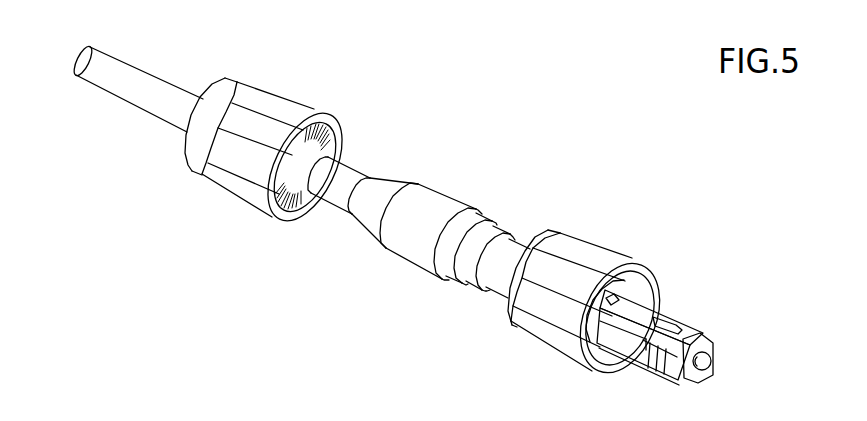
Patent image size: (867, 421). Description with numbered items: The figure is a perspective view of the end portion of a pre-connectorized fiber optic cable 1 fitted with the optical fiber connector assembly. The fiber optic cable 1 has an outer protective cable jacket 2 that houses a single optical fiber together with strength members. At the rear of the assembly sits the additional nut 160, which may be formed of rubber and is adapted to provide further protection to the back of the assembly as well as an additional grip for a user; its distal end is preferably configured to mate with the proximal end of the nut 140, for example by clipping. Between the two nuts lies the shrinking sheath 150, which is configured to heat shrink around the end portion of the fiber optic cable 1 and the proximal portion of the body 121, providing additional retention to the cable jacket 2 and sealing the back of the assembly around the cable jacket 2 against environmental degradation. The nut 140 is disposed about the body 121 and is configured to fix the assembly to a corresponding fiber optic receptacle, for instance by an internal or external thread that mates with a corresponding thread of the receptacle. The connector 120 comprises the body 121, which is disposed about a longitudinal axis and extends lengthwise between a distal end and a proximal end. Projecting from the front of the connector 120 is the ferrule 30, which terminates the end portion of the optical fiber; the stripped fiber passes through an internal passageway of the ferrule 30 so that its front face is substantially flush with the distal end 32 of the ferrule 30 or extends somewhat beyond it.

The fiber optic cable 1 is at (137, 66).
The cable jacket 2 is at (127, 53).
The additional nut 160 is at (272, 110).
The shrinking sheath 150 is at (413, 246).
The nut 140 is at (577, 257).
The connector 120 is at (699, 335).
The body 121 is at (699, 335).
The ferrule 30 is at (742, 372).
The distal end 32 is at (713, 360).